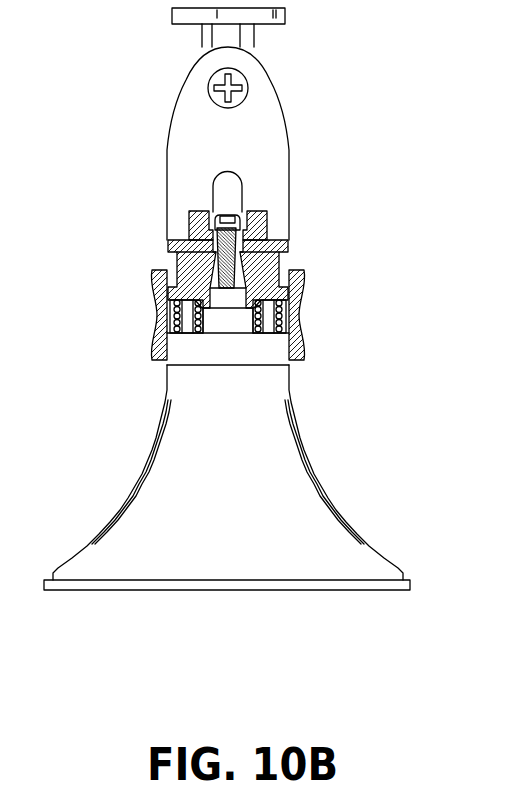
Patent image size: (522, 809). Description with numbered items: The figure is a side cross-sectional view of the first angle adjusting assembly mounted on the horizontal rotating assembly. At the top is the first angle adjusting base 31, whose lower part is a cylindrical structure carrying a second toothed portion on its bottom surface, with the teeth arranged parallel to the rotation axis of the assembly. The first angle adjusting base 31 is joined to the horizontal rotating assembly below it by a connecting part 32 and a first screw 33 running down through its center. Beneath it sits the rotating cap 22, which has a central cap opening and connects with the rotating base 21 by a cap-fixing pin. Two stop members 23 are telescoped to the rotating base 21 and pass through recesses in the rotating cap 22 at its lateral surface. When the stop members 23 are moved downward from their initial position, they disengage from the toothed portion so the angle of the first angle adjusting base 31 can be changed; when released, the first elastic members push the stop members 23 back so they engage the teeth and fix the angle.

The first angle adjusting base 31 is at (272, 152).
The connecting part 32 is at (267, 228).
The first screw 33 is at (267, 217).
The rotating cap 22 is at (288, 260).
The stop member 23 is at (300, 290).
The rotating base 21 is at (245, 323).